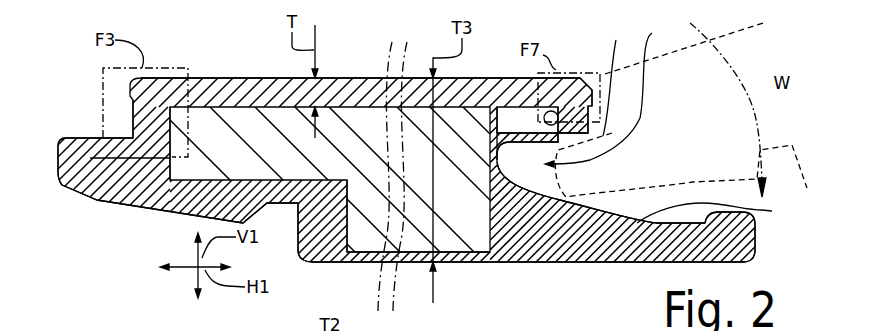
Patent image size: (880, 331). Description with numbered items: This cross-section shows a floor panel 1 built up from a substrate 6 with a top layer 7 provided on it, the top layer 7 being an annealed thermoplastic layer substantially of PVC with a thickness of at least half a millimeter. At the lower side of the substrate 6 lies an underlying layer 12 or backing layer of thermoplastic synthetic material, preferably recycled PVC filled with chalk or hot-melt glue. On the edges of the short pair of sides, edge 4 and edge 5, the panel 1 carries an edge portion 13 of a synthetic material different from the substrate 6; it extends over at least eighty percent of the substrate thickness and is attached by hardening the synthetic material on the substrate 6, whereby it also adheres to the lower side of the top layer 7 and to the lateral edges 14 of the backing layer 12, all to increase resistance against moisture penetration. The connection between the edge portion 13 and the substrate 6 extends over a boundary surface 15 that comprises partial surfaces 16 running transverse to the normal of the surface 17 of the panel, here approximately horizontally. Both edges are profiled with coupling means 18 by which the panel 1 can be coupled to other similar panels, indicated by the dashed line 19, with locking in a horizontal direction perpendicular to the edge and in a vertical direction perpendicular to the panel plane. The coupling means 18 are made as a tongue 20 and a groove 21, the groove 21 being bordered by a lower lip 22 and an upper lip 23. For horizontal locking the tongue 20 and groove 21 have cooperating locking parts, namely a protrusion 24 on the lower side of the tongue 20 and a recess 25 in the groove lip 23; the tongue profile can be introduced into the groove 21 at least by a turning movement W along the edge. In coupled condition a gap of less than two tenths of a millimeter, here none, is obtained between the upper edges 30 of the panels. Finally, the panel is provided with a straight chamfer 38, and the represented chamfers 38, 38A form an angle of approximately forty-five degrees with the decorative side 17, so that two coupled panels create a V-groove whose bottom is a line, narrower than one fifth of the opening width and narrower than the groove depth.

The floor panel 1 is at (503, 58).
The edge 4 is at (124, 207).
The edge 5 is at (644, 157).
The substrate 6 is at (372, 254).
The top layer 7 is at (253, 88).
The underlying layer 12 is at (460, 263).
The edge portion 13 is at (148, 208).
The lateral edges 14 is at (333, 261).
The boundary surface 15 is at (208, 174).
The partial surfaces 16 is at (175, 108).
The surface 17 is at (338, 78).
The coupling means 18 is at (97, 163).
The dashed line 19 is at (695, 182).
The tongue 20 is at (97, 201).
The groove 21 is at (616, 78).
The lower lip 22 is at (606, 240).
The upper lip 23 is at (550, 110).
The protrusion 24 is at (193, 213).
The recess 25 is at (712, 262).
The upper edges 30 is at (612, 26).
The chamfer 38 is at (137, 84).
The chamfer 38A is at (245, 323).